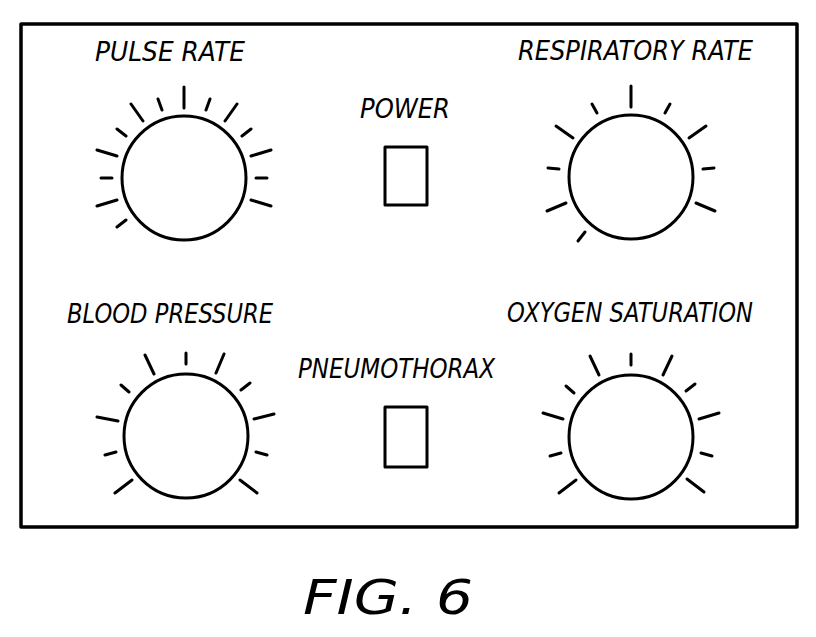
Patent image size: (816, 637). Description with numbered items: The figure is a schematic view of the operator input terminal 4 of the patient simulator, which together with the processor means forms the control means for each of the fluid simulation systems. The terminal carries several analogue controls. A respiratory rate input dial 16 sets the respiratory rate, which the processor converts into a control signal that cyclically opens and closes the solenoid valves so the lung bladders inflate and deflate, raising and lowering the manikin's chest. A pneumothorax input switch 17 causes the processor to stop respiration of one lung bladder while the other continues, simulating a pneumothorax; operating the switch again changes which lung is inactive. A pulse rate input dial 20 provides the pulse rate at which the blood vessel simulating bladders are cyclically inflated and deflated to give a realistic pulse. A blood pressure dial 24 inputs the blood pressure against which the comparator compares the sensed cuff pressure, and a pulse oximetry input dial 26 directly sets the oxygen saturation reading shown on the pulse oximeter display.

The operator input terminal 4 is at (115, 528).
The pulse rate input dial 20 is at (215, 232).
The respiratory rate input dial 16 is at (580, 213).
The blood pressure dial 24 is at (227, 387).
The pulse oximetry input dial 26 is at (675, 390).
The pneumothorax input switch 17 is at (427, 433).